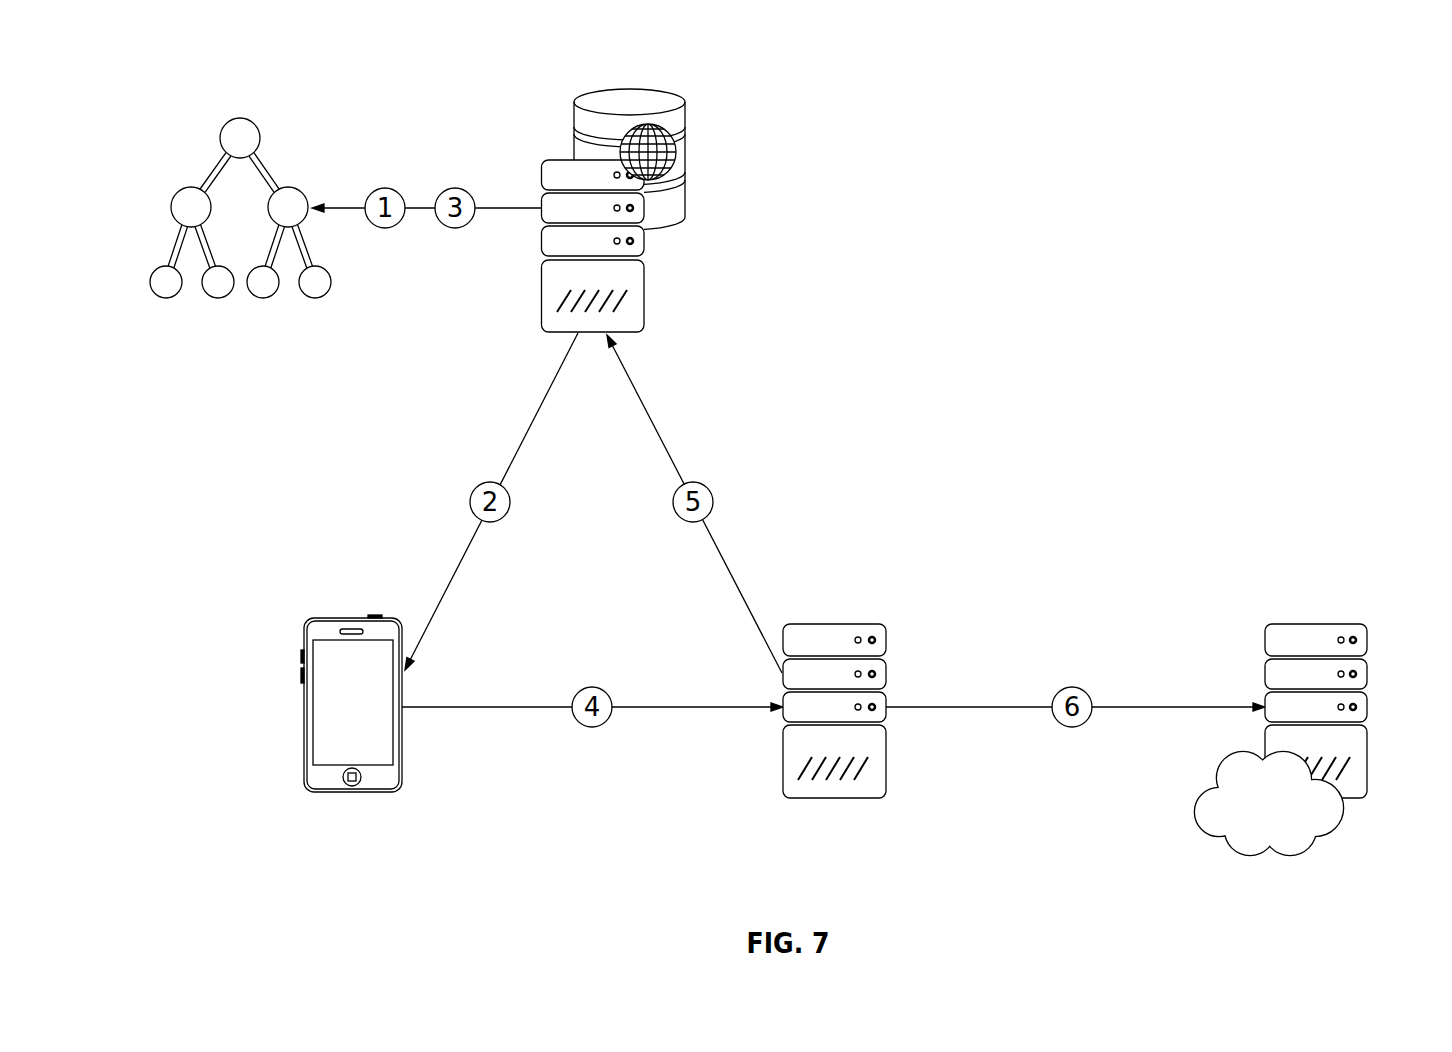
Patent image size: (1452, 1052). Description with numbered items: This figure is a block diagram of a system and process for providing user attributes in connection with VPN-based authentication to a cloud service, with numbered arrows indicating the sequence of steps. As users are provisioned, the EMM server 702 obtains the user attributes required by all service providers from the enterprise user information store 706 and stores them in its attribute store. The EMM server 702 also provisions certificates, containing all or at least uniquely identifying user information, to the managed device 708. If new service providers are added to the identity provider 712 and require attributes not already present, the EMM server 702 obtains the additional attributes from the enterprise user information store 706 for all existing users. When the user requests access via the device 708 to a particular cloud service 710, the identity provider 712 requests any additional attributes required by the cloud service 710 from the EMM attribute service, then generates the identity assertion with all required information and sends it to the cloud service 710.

The EMM server 702 is at (555, 158).
The enterprise user information store 706 is at (243, 118).
The managed device 708 is at (350, 618).
The cloud service 710 is at (1315, 624).
The identity provider 712 is at (833, 624).